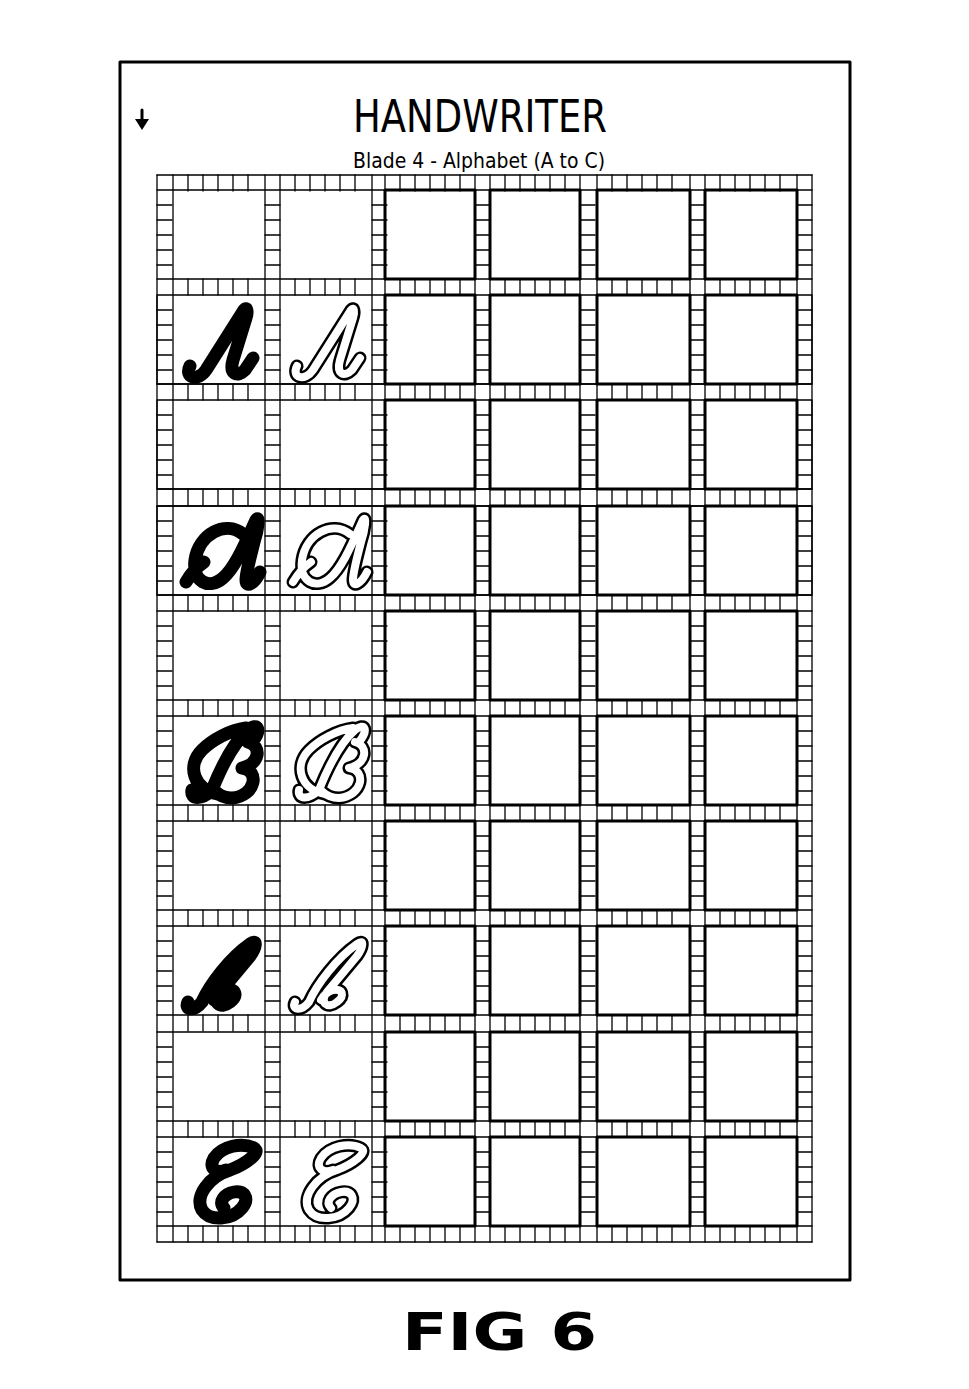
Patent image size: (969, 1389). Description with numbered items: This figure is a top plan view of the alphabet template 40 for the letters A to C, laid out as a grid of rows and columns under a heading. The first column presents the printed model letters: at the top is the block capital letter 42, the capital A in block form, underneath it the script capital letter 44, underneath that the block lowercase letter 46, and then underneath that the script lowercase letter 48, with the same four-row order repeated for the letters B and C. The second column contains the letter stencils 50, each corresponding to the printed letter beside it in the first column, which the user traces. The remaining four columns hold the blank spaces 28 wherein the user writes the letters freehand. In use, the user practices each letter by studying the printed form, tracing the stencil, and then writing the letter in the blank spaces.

The alphabet template 40 is at (822, 120).
The block capital letter 42 is at (188, 200).
The letter stencil 50 is at (302, 200).
The blank space 28 is at (448, 213).
The script capital letter 44 is at (187, 325).
The block lowercase letter 46 is at (193, 430).
The script lowercase letter 48 is at (200, 528).